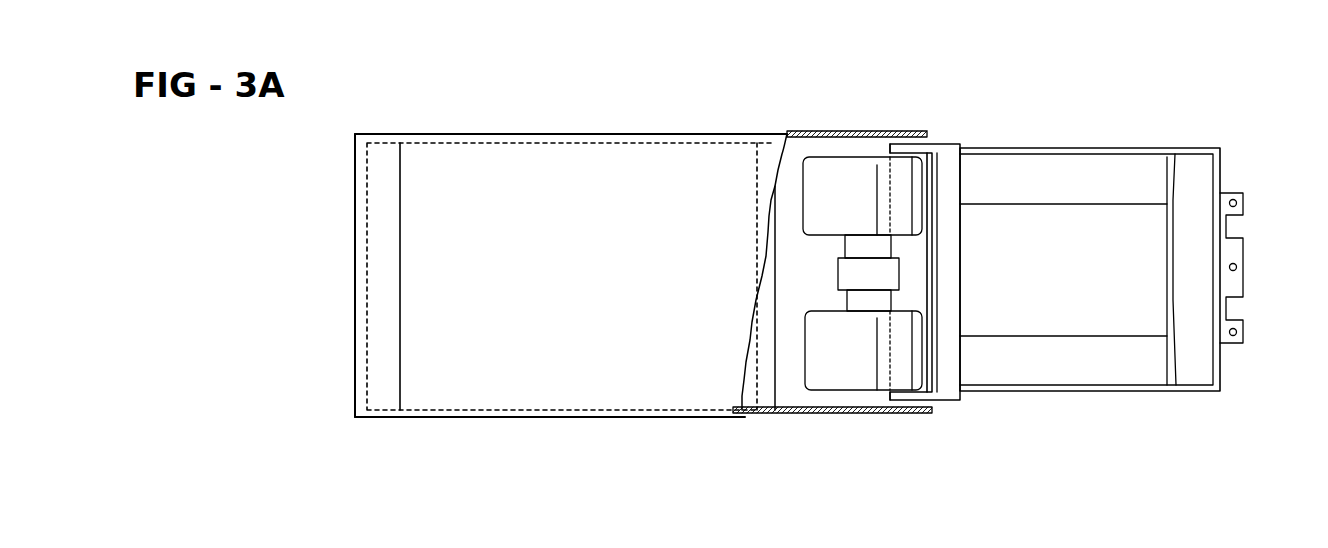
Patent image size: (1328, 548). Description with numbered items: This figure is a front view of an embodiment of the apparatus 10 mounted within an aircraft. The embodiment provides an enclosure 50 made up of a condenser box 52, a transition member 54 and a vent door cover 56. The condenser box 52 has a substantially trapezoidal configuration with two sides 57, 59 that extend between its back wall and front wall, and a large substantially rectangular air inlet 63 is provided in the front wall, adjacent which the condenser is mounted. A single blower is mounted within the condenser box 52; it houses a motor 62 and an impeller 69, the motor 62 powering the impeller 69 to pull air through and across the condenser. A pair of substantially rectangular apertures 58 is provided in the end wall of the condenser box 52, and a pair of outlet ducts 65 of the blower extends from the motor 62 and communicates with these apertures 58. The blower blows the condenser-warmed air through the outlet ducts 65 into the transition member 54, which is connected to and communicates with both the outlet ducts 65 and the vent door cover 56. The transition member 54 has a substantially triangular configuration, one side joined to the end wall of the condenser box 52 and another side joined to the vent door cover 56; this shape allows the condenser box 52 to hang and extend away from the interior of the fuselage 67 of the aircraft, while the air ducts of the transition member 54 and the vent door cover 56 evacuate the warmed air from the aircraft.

The apparatus 10 is at (705, 259).
The enclosure 50 is at (1130, 282).
The condenser box 52 is at (745, 128).
The transition member 54 is at (935, 144).
The vent door cover 56 is at (1130, 148).
The side 57 is at (621, 133).
The rectangular apertures 58 is at (868, 401).
The side 59 is at (560, 418).
The motor 62 is at (898, 272).
The air inlet 63 is at (432, 134).
The outlet ducts 65 is at (951, 156).
The fuselage 67 is at (1152, 153).
The impeller 69 is at (842, 173).